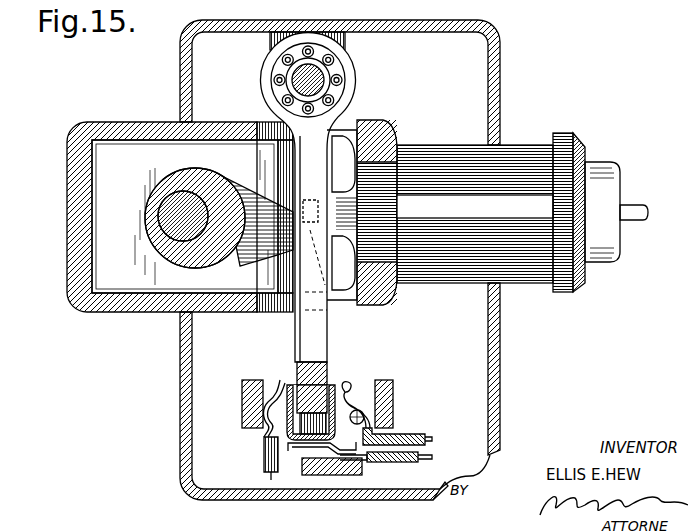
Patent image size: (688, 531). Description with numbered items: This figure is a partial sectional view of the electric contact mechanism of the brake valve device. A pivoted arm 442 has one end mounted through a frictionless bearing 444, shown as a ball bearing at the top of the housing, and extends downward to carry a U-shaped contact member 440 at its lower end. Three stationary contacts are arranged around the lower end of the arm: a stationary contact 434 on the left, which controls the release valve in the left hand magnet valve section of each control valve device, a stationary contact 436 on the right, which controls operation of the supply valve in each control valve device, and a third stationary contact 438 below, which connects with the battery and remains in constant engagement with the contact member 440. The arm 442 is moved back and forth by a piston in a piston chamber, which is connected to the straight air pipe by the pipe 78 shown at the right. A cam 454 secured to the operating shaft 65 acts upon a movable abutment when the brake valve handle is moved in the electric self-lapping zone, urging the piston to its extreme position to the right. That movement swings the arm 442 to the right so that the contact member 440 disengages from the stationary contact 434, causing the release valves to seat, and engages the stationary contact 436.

The frictionless bearing 444 is at (327, 75).
The operating shaft 65 is at (185, 205).
The pipe 78 is at (648, 204).
The cam 454 is at (268, 232).
The arm 442 is at (303, 332).
The U-shaped contact member 440 is at (333, 387).
The stationary contact 434 is at (283, 392).
The stationary contact 436 is at (353, 388).
The third stationary contact 438 is at (325, 445).